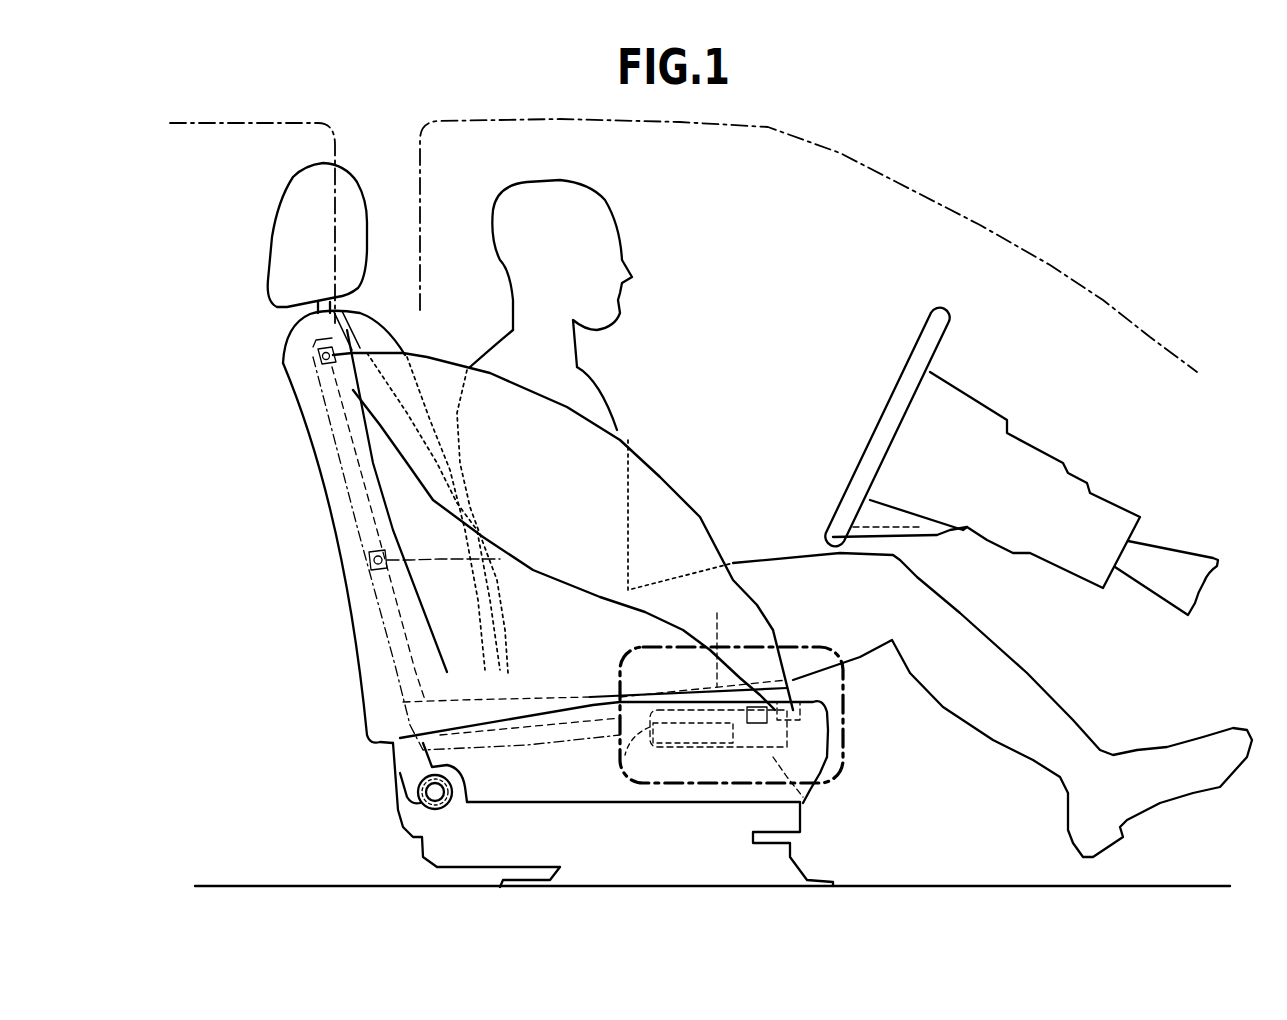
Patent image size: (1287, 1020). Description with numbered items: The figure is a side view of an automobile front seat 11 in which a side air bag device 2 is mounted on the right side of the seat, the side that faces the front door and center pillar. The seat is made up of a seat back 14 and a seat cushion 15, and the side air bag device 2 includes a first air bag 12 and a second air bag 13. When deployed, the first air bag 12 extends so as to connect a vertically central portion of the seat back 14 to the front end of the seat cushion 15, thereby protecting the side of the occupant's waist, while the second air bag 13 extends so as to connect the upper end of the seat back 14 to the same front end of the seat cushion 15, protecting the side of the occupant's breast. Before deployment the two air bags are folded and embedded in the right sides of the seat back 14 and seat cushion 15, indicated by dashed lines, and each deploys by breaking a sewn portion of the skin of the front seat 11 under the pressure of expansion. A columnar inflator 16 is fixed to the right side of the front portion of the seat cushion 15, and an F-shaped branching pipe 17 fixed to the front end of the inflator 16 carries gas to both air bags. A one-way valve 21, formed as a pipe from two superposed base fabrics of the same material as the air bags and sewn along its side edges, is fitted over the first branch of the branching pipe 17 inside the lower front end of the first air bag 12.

The seat belt retractor device 2 is at (853, 777).
The front seat 11 is at (321, 563).
The first air bag 12 is at (403, 702).
The second air bag 13 is at (650, 490).
The seat back 14 is at (322, 455).
The seat cushion 15 is at (593, 787).
The inflator 16 is at (683, 757).
The branching pipe 17 is at (805, 778).
The one-way valve 21 is at (717, 683).